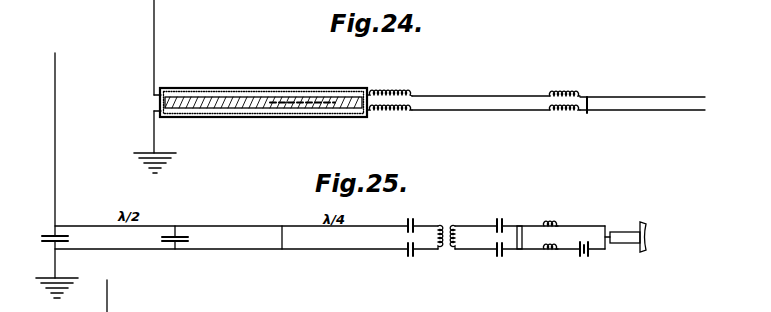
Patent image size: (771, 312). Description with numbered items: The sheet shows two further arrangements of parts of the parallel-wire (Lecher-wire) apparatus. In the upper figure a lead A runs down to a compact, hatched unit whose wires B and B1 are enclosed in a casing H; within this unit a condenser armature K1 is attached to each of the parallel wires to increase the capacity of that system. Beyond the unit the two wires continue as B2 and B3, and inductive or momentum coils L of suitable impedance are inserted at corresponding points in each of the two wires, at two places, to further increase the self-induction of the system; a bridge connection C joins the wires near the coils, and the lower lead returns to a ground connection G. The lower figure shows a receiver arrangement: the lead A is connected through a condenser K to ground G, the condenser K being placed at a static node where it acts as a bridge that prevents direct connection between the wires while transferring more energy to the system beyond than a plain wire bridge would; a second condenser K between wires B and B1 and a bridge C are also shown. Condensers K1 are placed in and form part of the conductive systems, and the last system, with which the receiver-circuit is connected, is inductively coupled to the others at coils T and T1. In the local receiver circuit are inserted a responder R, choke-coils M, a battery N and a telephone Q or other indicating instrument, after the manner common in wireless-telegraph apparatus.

In FIG. 24, the antenna / aerial conductor A is at (163, 47).
In FIG. 25, the antenna / aerial conductor A is at (62, 144).
In FIG. 24, the conductor B is at (216, 80).
In FIG. 25, the conductor B is at (330, 216).
In FIG. 24, the conductor B1 is at (221, 110).
In FIG. 25, the conductor B1 is at (220, 256).
In FIG. 24, the conductor B2 is at (558, 84).
In FIG. 24, the conductor B3 is at (558, 122).
In FIG. 25, the condenser K is at (168, 244).
In FIG. 24, the condenser K1 is at (305, 80).
In FIG. 25, the condenser K1 is at (406, 222).
In FIG. 24, the insulating casing H is at (327, 116).
In FIG. 24, the inductive or momentum coils L is at (473, 103).
In FIG. 24, the connection / bridge C is at (589, 104).
In FIG. 25, the connection / bridge C is at (282, 237).
In FIG. 24, the ground G is at (141, 143).
In FIG. 25, the ground G is at (48, 291).
In FIG. 25, the transformer coil T is at (435, 225).
In FIG. 25, the transformer coil T1 is at (459, 226).
In FIG. 25, the responder R is at (520, 250).
In FIG. 25, the choke-coils M is at (549, 240).
In FIG. 25, the battery N is at (586, 261).
In FIG. 25, the telephone Q is at (625, 248).